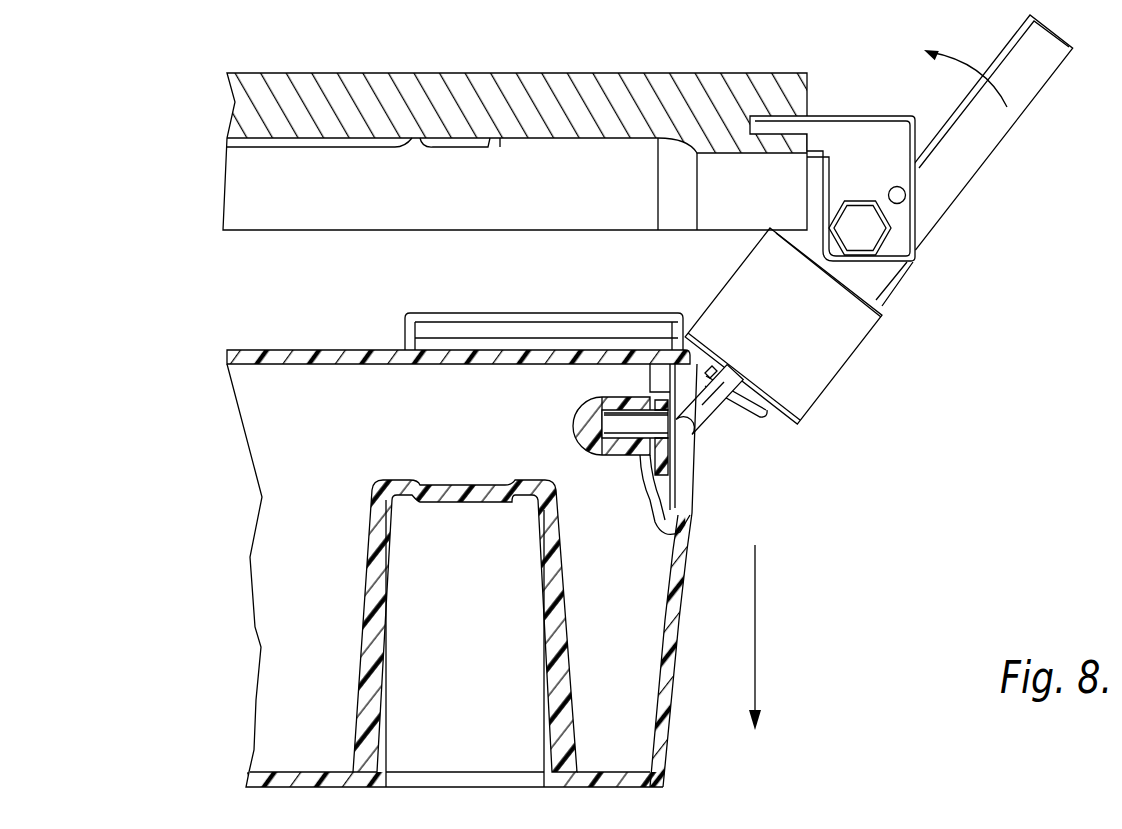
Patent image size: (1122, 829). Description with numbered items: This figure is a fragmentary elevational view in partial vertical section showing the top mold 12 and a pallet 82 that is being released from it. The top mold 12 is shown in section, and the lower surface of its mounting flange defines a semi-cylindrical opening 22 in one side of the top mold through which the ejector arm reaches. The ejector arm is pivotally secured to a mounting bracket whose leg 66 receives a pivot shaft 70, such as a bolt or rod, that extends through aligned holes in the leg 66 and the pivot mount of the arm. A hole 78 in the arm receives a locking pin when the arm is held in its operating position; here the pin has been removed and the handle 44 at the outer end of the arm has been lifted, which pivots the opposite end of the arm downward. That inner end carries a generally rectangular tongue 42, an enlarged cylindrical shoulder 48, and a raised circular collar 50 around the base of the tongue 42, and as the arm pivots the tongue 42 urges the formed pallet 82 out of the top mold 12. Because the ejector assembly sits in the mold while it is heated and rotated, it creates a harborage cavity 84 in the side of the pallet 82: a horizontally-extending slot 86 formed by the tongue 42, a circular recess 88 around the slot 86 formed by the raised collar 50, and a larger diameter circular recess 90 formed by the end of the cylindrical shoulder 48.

The top mold portion 12 is at (697, 85).
The semi-cylindrical opening 22 is at (733, 208).
The tongue 42 is at (715, 373).
The handle 44 is at (1035, 63).
The cylindrical shoulder 48 is at (842, 340).
The raised circular collar 50 is at (763, 407).
The leg 66 is at (903, 223).
The pivot shaft 70 is at (860, 237).
The hole 78 is at (905, 194).
The pallet 82 is at (662, 728).
The harborage cavity 84 is at (682, 485).
The slot 86 is at (622, 432).
The circular recess 88 is at (660, 467).
The larger diameter circular recess 90 is at (660, 523).